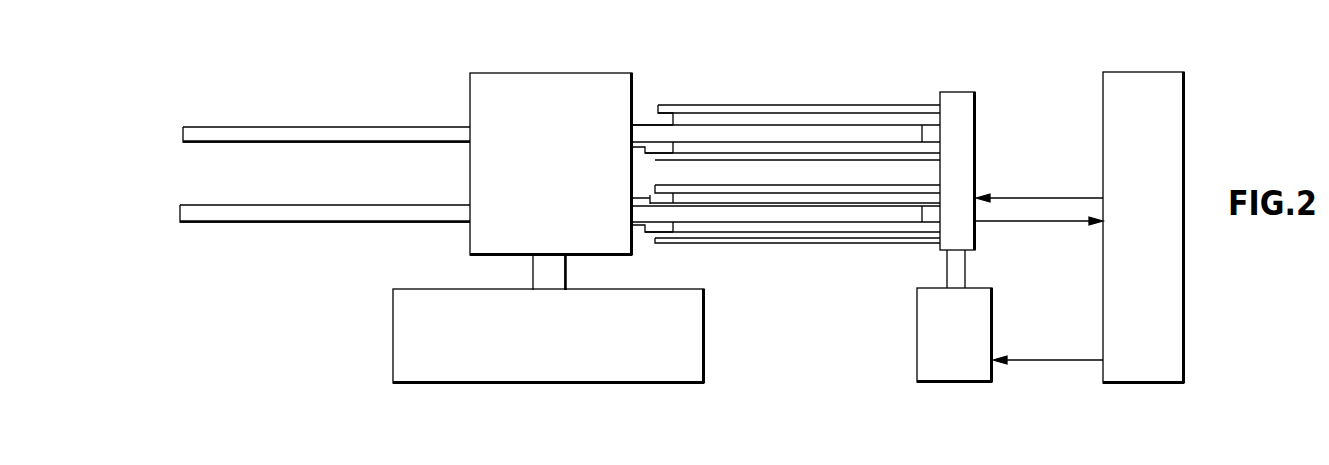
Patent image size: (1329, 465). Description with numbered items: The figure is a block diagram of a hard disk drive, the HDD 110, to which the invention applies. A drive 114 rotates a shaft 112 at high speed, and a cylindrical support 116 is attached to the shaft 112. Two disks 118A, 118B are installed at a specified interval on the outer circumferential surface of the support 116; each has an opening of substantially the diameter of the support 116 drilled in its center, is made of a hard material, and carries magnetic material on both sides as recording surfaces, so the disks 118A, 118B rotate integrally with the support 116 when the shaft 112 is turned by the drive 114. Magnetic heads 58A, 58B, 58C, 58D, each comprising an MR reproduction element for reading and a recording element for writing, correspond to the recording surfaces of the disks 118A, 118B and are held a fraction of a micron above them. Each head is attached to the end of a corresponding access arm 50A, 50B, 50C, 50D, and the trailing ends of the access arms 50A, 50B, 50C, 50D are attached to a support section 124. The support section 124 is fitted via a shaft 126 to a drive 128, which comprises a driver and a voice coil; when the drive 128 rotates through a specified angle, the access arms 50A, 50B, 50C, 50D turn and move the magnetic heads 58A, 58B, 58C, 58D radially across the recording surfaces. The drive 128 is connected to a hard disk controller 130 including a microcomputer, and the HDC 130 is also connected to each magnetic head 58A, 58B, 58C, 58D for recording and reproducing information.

The HDD 110 is at (342, 92).
The shaft 112 is at (557, 275).
The drive 114 is at (690, 348).
The cylindrical support 116 is at (570, 75).
The disk 118A is at (187, 128).
The disk 118B is at (187, 208).
The support section 124 is at (958, 97).
The shaft 126 is at (957, 272).
The drive 128 is at (950, 375).
The hard disk controller 130 is at (1137, 372).
The access arm 50A is at (783, 107).
The access arm 50B is at (683, 160).
The access arm 50C is at (863, 187).
The access arm 50D is at (748, 238).
The magnetic head 58A is at (648, 115).
The magnetic head 58B is at (632, 152).
The magnetic head 58C is at (650, 198).
The magnetic head 58D is at (647, 230).